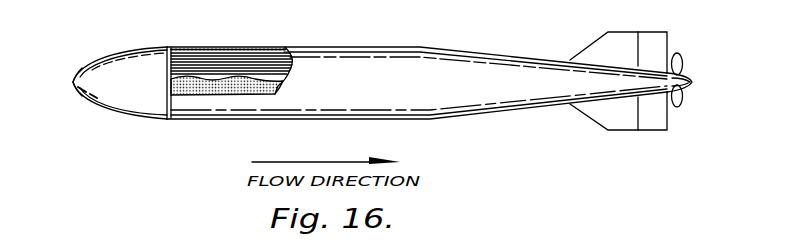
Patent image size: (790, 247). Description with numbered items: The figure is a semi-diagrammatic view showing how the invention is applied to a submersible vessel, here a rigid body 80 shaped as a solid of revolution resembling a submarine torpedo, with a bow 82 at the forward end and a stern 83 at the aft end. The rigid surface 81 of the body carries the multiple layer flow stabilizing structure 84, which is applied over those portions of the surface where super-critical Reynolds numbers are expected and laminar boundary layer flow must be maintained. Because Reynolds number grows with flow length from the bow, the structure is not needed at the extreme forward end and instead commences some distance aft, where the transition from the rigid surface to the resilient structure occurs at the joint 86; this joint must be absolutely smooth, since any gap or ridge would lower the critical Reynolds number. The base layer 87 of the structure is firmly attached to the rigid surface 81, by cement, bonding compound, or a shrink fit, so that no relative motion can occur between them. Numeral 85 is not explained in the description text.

The rigid body 80 is at (142, 102).
The rigid surface 81 is at (188, 62).
The bow 82 is at (73, 82).
The stern 83 is at (690, 81).
The multiple layer flow stabilizing structure 84 is at (383, 47).
The outer coating layer 85 is at (250, 47).
The joint 86 is at (170, 100).
The base layer 87 is at (284, 47).